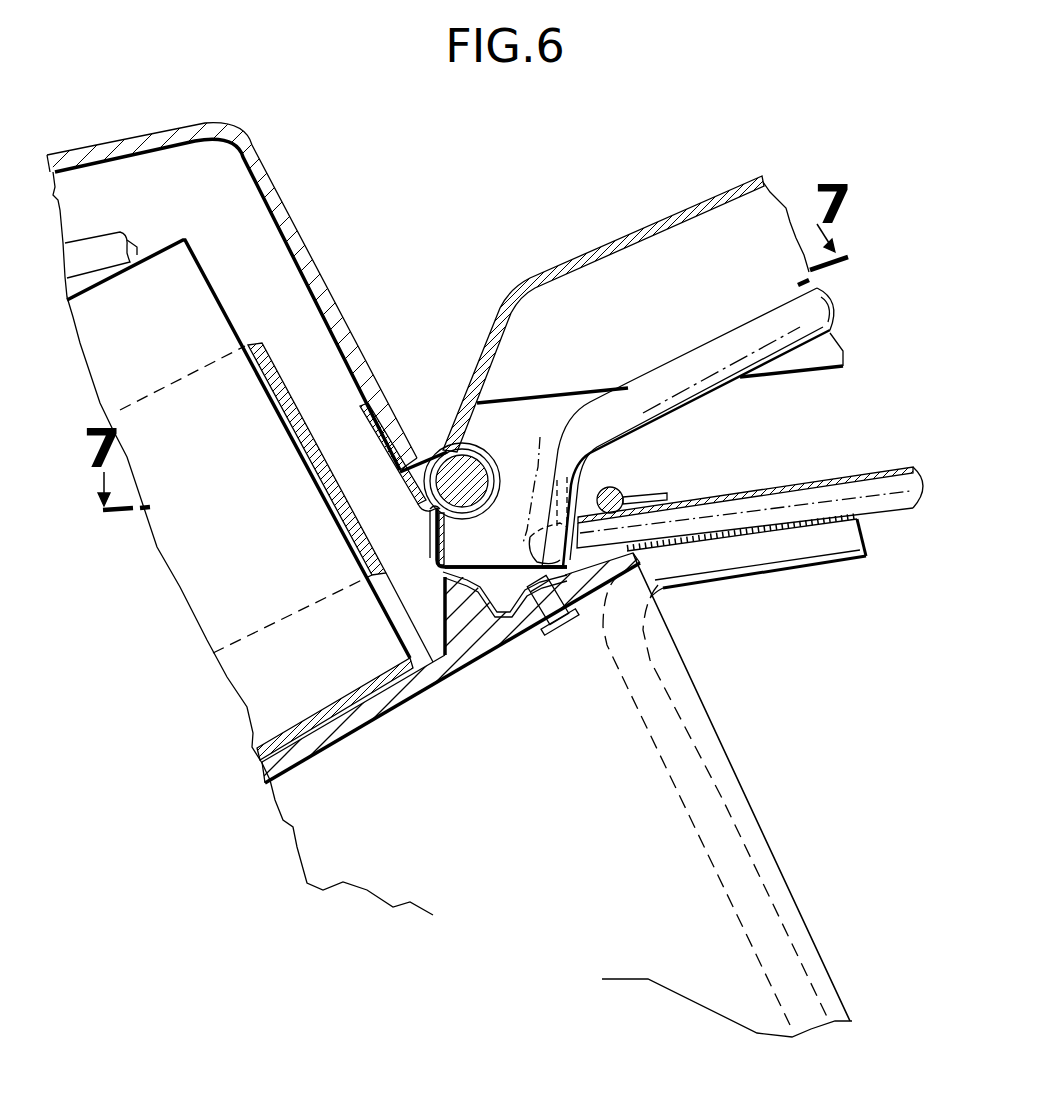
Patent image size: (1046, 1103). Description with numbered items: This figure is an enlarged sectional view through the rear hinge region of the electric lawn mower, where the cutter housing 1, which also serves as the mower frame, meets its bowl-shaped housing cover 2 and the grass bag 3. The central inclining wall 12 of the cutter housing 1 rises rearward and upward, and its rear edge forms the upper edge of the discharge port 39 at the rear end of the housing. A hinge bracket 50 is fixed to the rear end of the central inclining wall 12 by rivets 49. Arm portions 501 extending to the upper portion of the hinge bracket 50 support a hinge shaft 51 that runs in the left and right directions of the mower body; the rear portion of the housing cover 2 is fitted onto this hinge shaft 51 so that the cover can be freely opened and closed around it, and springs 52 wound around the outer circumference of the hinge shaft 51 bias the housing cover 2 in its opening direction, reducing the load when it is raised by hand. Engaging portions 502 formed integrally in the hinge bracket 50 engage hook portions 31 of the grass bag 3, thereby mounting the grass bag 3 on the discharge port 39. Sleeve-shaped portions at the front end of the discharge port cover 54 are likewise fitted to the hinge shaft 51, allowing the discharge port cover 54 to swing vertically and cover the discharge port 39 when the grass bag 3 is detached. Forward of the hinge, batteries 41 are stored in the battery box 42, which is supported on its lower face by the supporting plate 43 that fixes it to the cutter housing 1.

The cutter housing 1 is at (575, 948).
The housing cover 2 is at (318, 272).
The grass bag 3 is at (790, 480).
The hook portion 31 is at (533, 540).
The central inclining wall 12 is at (408, 697).
The discharge port 39 is at (770, 843).
The battery 41 is at (124, 331).
The battery box 42 is at (292, 407).
The supporting plate 43 is at (300, 722).
The rivet 49 is at (553, 628).
The hinge bracket 50 is at (488, 614).
The arm portion 501 is at (444, 545).
The engaging portion 502 is at (537, 475).
The hinge shaft 51 is at (443, 447).
The spring 52 is at (383, 452).
The discharge port cover 54 is at (598, 253).